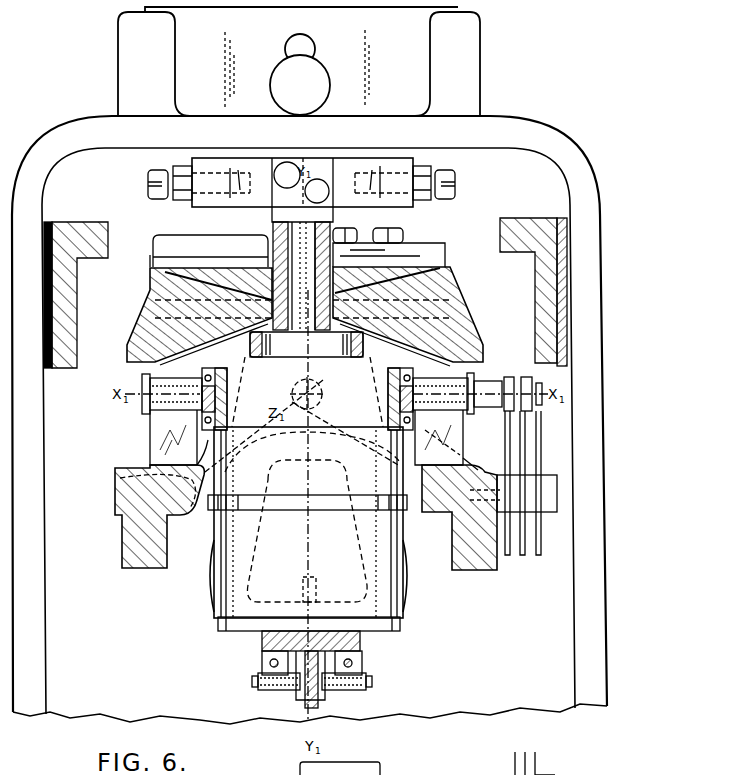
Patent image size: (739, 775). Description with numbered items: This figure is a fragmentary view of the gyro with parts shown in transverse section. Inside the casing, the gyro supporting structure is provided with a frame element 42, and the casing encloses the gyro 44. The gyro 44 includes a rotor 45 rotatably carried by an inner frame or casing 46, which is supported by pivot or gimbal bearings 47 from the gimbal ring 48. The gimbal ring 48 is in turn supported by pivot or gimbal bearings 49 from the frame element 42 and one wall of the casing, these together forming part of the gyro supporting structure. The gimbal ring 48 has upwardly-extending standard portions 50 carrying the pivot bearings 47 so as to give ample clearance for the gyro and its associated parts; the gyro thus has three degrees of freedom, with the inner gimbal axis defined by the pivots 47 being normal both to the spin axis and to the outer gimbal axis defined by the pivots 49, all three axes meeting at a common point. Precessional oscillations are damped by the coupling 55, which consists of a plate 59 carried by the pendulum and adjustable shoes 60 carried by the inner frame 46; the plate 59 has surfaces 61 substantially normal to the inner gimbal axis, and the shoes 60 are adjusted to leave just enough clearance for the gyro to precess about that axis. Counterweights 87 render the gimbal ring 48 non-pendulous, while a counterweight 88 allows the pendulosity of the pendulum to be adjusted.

The frame element 42 is at (100, 246).
The gyro 44 is at (199, 589).
The rotor 45 is at (462, 296).
The inner frame 46 is at (208, 492).
The pivot bearings 47 is at (214, 370).
The gimbal ring 48 is at (125, 496).
The pivot bearings 49 is at (321, 388).
The standard portions 50 is at (157, 437).
The coupling 55 is at (360, 711).
The plate 59 is at (300, 692).
The adjustable shoes 60 is at (312, 663).
The surfaces 61 is at (312, 690).
The counterweights 87 is at (436, 243).
The counterweight 88 is at (413, 202).